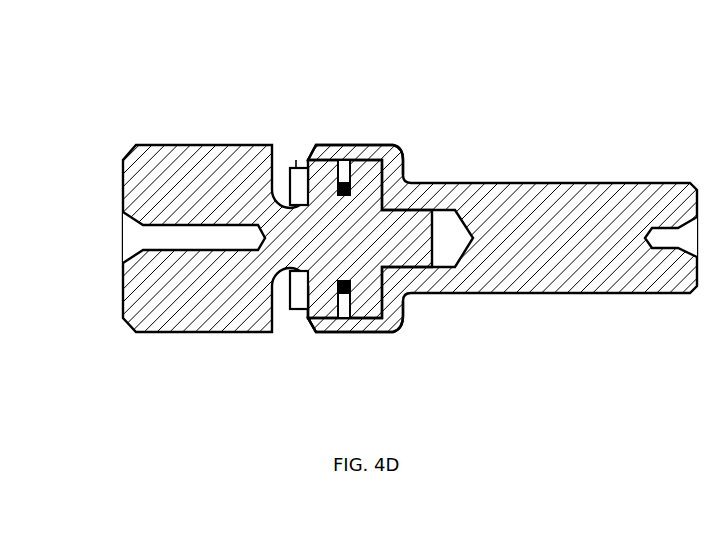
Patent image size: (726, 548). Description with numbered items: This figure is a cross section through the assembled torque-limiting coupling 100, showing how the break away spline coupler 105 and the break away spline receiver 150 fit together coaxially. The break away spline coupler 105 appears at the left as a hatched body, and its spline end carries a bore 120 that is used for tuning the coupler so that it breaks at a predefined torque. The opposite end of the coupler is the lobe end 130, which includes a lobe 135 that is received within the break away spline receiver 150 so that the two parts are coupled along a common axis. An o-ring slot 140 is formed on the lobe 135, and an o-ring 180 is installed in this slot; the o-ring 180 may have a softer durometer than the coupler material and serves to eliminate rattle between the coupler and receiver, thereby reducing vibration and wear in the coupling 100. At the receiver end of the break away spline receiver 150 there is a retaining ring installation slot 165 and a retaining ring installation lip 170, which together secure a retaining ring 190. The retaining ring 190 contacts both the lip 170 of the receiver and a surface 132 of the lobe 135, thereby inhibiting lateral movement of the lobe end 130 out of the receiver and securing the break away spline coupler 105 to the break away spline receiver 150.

The torque-limiting coupling 100 is at (262, 40).
The break away spline coupler 105 is at (183, 122).
The bore 120 is at (103, 222).
The lobe end 130 is at (388, 144).
The surface of the lobe 132 is at (303, 314).
The lobe 135 is at (341, 144).
The o-ring slot 140 is at (341, 336).
The break away spline receiver 150 is at (578, 163).
The retaining ring installation slot 165 is at (302, 162).
The retaining ring installation lip 170 is at (288, 168).
The o-ring 180 is at (345, 294).
The retaining ring 190 is at (291, 316).